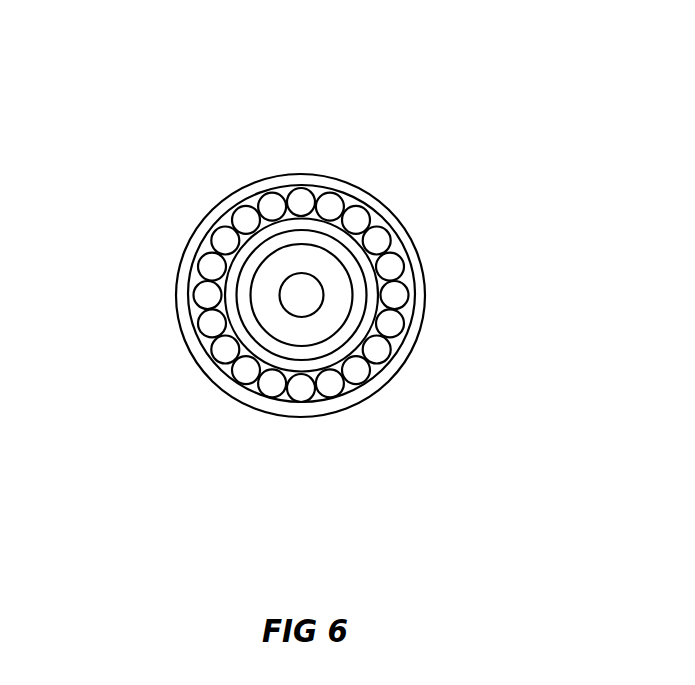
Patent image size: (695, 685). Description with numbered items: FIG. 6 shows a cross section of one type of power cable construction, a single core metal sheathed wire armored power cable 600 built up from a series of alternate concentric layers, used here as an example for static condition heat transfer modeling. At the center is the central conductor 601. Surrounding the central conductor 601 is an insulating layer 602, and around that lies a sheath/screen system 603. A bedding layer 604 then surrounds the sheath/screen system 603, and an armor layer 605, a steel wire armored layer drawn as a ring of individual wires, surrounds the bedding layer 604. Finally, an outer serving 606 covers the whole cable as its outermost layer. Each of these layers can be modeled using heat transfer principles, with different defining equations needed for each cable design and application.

The cable assembly 600 is at (147, 104).
The central conductor 601 is at (295, 290).
The insulating layer 602 is at (328, 273).
The sheath/screen system 603 is at (357, 310).
The bedding layer 604 is at (363, 333).
The armor layer 605 is at (363, 372).
The outer serving 606 is at (307, 410).